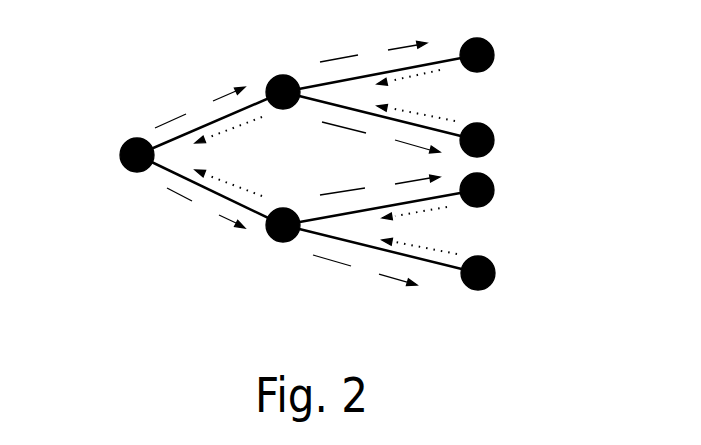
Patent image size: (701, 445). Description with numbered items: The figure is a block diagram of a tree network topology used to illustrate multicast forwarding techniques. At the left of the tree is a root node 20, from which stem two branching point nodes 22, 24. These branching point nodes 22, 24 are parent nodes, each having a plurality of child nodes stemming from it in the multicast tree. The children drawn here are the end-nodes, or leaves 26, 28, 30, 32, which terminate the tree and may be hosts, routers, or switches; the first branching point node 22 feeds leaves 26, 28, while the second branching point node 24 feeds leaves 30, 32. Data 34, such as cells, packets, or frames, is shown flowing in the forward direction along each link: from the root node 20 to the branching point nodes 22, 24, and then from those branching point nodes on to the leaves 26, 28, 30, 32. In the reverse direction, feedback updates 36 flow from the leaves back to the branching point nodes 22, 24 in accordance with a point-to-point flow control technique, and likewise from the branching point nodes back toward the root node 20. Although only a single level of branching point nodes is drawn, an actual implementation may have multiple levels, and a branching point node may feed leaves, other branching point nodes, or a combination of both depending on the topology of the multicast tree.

The root node 20 is at (118, 166).
The branching point node 22 is at (270, 76).
The branching point node 24 is at (269, 242).
The leaf 26 is at (491, 64).
The leaf 28 is at (494, 144).
The leaf 30 is at (494, 200).
The leaf 32 is at (495, 283).
The data 34 is at (297, 163).
The feedback updates 36 is at (326, 162).